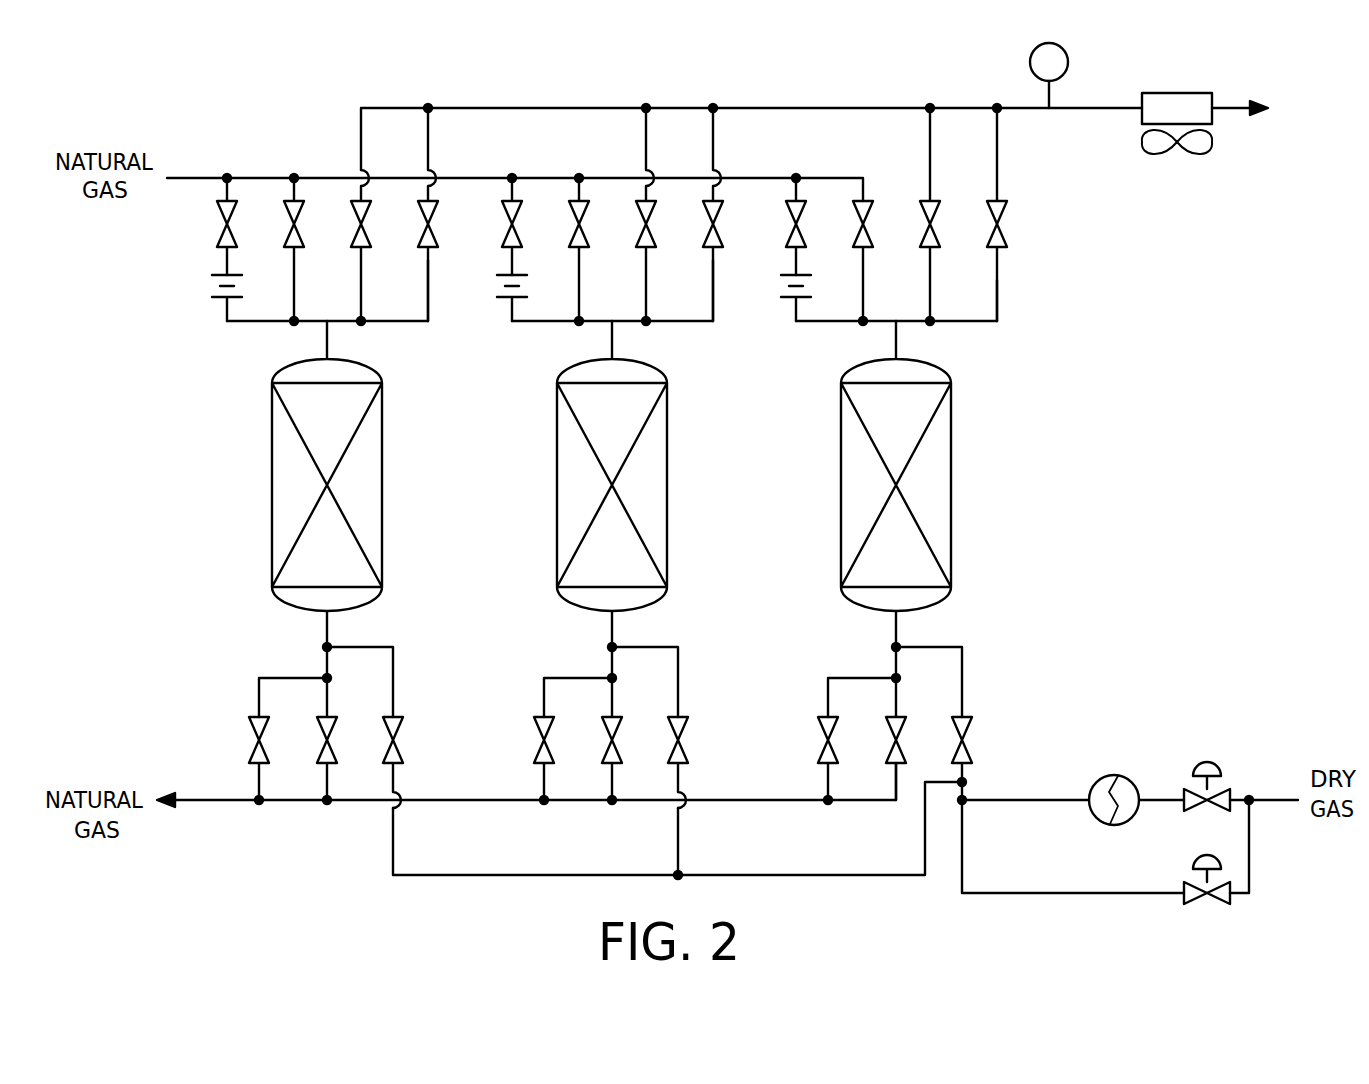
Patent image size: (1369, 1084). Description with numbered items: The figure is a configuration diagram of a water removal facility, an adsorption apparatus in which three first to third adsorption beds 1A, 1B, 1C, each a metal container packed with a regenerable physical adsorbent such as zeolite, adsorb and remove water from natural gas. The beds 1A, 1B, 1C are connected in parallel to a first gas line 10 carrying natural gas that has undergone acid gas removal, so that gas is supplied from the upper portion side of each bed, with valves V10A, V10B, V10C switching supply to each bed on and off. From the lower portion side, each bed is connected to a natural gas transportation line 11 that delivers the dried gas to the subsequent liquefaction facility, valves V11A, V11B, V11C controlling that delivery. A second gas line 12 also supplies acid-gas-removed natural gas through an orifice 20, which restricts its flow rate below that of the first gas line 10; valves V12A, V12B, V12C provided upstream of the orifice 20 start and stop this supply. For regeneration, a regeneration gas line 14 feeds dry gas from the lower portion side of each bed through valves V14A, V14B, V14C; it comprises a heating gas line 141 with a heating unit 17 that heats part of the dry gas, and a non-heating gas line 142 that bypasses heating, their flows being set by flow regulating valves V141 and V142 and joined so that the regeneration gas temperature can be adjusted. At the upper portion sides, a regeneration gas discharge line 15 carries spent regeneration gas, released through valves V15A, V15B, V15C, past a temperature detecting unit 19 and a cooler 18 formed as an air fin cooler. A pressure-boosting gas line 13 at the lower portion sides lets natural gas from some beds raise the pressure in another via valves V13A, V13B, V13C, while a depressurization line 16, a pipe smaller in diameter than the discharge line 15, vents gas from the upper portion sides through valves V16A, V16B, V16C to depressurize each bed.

The first gas line 10 is at (190, 177).
The natural gas transportation line 11 is at (209, 801).
The second gas line 12 is at (253, 322).
The pressure-boosting gas line 13 is at (284, 677).
The regeneration gas line 14 is at (394, 666).
The regeneration gas discharge line 15 is at (542, 107).
The depressurization line 16 is at (430, 270).
The heating unit 17 is at (1128, 755).
The cooler 18 is at (1183, 92).
The temperature detecting unit 19 is at (1068, 64).
The orifice 20 is at (212, 291).
The heating gas line 141 is at (1030, 797).
The non-heating gas line 142 is at (1030, 890).
The first adsorption bed 1A is at (383, 484).
The second adsorption bed 1B is at (668, 484).
The third adsorption bed 1C is at (952, 484).
The valve V10A is at (288, 232).
The valve V10B is at (574, 230).
The valve V10C is at (860, 232).
The valve V11A is at (318, 752).
The valve V11B is at (602, 752).
The valve V11C is at (887, 752).
The valve V12A is at (217, 231).
The valve V12B is at (506, 230).
The valve V12C is at (790, 232).
The valve V13A is at (250, 730).
The valve V13B is at (535, 727).
The valve V13C is at (820, 727).
The valve V14A is at (401, 749).
The valve V14B is at (686, 749).
The valve V14C is at (971, 732).
The valve V15A is at (355, 222).
The valve V15B is at (641, 215).
The valve V15C is at (938, 232).
The valve V16A is at (420, 233).
The valve V16B is at (720, 236).
The valve V16C is at (1006, 232).
The flow regulating valve V141 is at (1212, 762).
The flow regulating valve V142 is at (1222, 860).